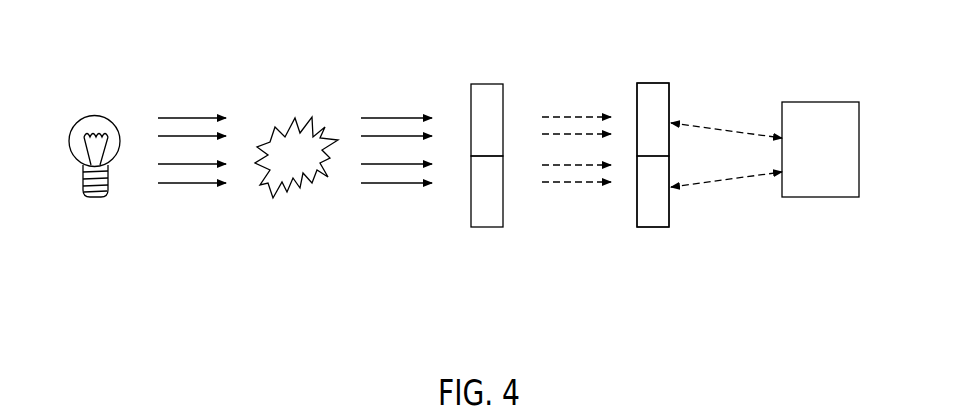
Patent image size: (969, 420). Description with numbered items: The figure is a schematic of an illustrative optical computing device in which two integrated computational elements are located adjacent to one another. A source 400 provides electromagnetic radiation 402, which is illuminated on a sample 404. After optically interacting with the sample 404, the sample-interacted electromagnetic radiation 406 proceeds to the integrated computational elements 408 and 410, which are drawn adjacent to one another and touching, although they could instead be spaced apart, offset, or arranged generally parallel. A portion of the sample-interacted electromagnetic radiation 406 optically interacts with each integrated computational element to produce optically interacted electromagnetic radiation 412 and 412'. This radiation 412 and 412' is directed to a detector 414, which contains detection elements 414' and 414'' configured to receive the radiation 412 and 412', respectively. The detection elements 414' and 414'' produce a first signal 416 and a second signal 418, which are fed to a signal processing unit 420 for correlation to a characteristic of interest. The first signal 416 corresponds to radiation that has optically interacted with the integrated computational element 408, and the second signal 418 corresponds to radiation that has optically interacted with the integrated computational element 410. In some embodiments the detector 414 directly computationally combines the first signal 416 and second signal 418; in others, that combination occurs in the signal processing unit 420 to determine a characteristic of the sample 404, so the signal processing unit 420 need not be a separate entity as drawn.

The source 400 is at (94, 117).
The electromagnetic radiation 402 is at (178, 118).
The sample 404 is at (276, 127).
The sample-interacted electromagnetic radiation 406 is at (375, 118).
The integrated computational element 408 is at (489, 92).
The integrated computational element 410 is at (489, 219).
The optically interacted electromagnetic radiation 412 is at (576, 92).
The optically interacted electromagnetic radiation 412' is at (576, 209).
The detector 414 is at (633, 123).
The detection element 414' is at (693, 102).
The detection element 414'' is at (680, 217).
The first signal 416 is at (727, 128).
The second signal 418 is at (727, 181).
The signal processing unit 420 is at (840, 162).